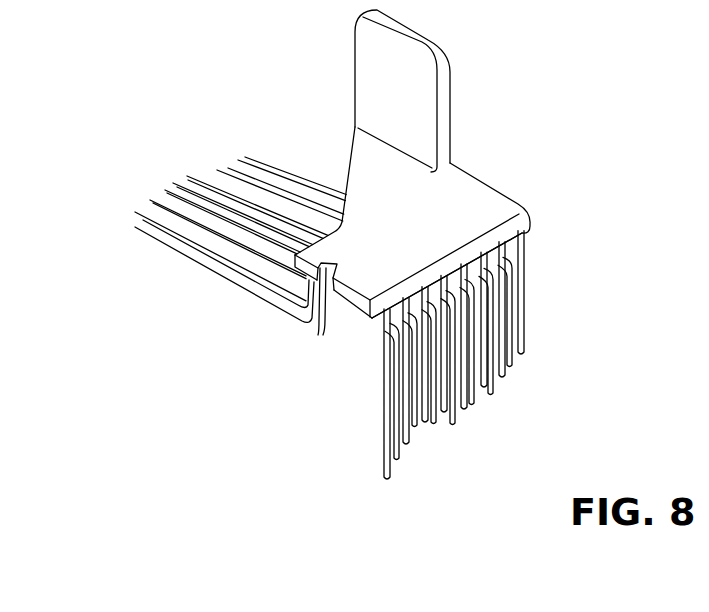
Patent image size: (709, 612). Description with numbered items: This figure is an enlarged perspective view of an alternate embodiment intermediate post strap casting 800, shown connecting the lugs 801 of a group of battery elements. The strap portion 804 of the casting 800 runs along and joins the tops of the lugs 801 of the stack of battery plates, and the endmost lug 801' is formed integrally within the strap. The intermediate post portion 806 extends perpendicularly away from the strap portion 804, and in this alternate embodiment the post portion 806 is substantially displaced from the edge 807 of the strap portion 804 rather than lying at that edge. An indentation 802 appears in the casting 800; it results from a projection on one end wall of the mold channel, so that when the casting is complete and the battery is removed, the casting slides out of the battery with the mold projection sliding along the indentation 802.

The intermediate post strap casting 800 is at (522, 171).
The lugs 801 is at (499, 355).
The endmost lug 801' is at (323, 308).
The indentation 802 is at (319, 334).
The strap portion 804 is at (500, 217).
The intermediate post portion 806 is at (444, 97).
The edge of the strap portion 807 is at (455, 260).